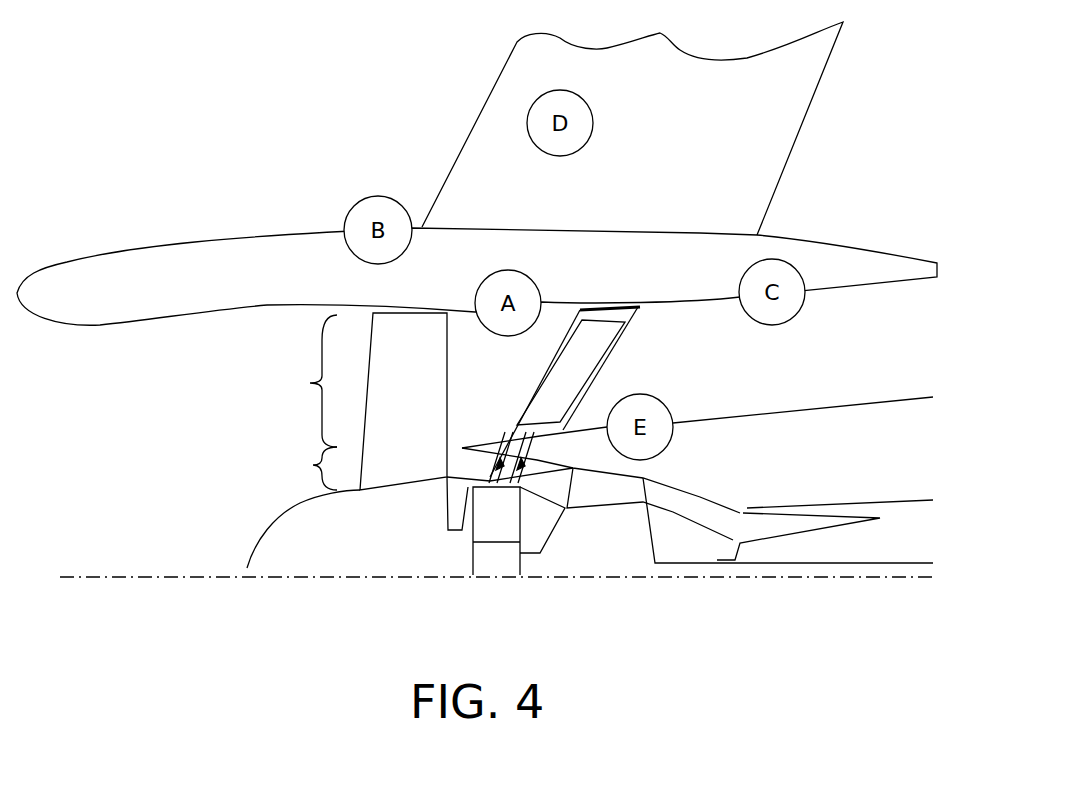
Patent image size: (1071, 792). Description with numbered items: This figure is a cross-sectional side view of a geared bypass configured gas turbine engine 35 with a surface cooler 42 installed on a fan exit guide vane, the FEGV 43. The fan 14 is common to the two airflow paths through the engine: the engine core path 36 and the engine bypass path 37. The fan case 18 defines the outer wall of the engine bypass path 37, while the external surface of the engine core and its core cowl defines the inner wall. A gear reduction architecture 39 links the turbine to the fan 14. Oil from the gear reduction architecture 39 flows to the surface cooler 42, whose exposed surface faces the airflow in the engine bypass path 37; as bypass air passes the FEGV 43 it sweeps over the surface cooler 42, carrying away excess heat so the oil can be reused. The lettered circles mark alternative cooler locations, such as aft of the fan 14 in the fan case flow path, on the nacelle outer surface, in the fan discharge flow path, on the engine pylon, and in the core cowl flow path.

The geared bypass configured gas turbine engine 35 is at (191, 70).
The fan case 18 is at (67, 266).
The fan 14 is at (382, 380).
The engine bypass path 37 is at (306, 381).
The engine core path 36 is at (306, 468).
The surface cooler 42 is at (563, 366).
The fan exit guide vane (FEGV) 43 is at (620, 312).
The gear reduction architecture 39 is at (493, 575).